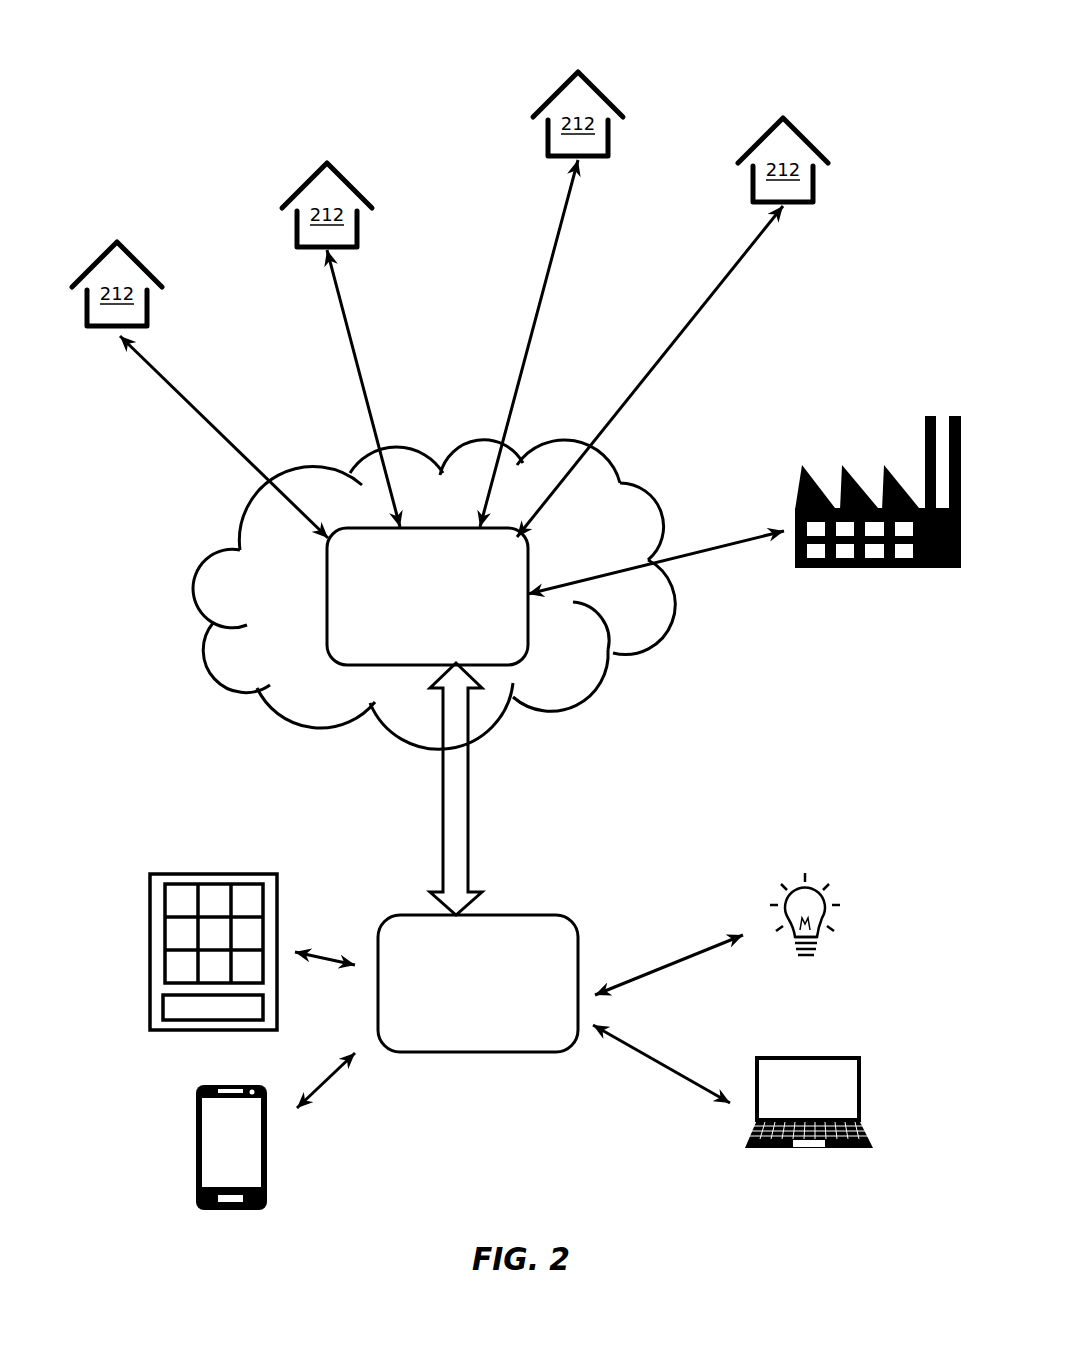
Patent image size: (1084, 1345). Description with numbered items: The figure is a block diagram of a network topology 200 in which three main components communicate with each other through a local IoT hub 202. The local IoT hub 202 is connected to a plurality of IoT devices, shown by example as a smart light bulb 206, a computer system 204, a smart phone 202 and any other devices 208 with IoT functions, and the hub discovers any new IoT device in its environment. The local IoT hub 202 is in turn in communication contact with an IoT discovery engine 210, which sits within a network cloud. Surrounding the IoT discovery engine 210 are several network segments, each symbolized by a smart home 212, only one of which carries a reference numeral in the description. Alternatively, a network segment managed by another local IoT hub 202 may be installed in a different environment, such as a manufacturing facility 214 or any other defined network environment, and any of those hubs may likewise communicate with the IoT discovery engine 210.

The network topology 200 is at (202, 76).
The local IoT hub 202 is at (430, 989).
The computer system 204 is at (776, 1106).
The smart light bulb 206 is at (815, 864).
The other devices with IoT functions 208 is at (147, 940).
The IoT discovery engine 210 is at (369, 604).
The smart home 212 is at (450, 199).
The manufacturing facility 214 is at (840, 446).